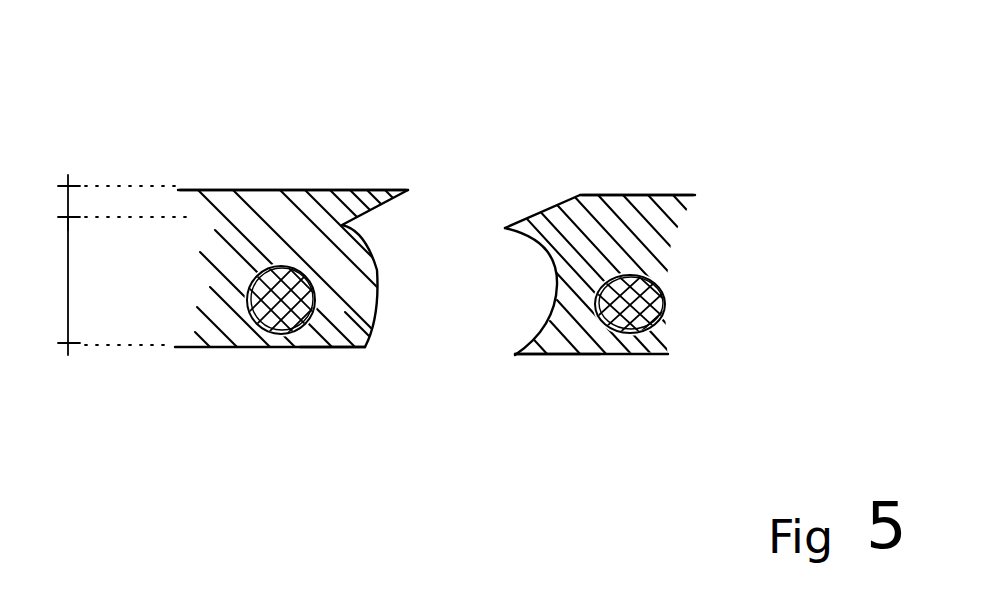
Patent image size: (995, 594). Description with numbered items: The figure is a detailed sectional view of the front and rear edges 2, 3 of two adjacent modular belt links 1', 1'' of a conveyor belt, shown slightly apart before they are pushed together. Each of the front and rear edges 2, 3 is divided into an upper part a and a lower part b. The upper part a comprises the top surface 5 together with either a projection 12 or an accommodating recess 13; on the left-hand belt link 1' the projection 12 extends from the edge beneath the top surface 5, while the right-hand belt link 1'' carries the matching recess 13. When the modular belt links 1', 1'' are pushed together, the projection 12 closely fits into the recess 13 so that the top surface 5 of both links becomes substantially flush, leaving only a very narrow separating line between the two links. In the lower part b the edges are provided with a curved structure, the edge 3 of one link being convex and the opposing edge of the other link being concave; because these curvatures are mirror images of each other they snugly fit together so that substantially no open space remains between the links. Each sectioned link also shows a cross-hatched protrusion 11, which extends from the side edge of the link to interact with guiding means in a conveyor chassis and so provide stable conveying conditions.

The modular belt link 1' is at (291, 203).
The modular belt link 1'' is at (619, 202).
The front edge 2 is at (518, 375).
The rear edge 3 is at (365, 405).
The top surface 5 is at (303, 183).
The protrusion 11 is at (255, 315).
The projection 12 is at (383, 177).
The accommodating recess 13 is at (540, 195).
The upper part a is at (107, 202).
The lower part b is at (98, 286).